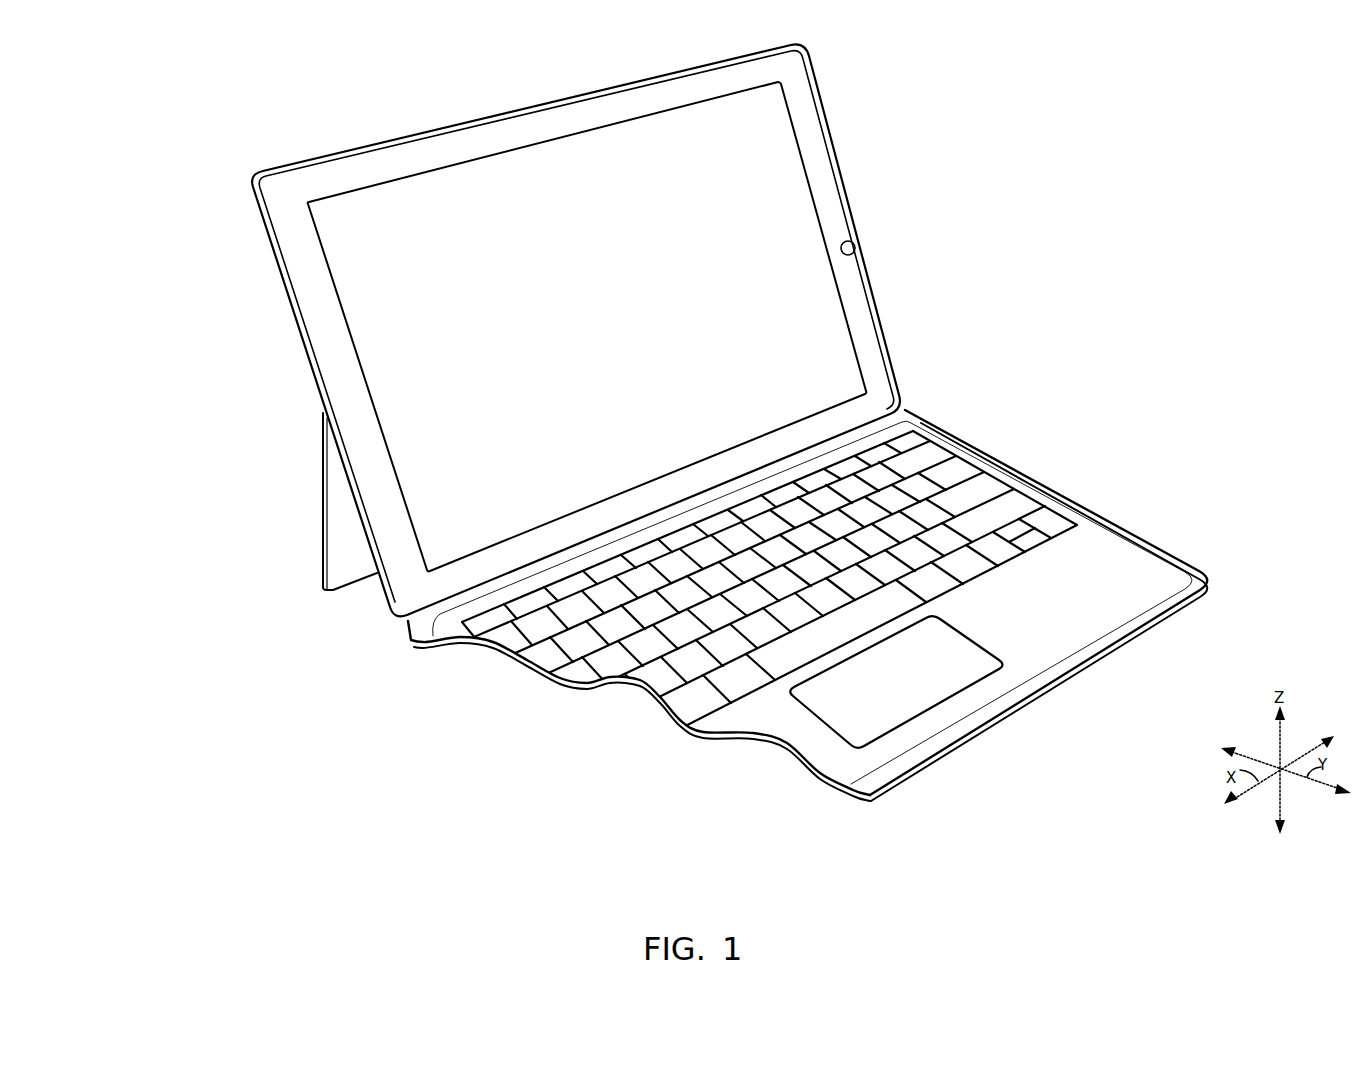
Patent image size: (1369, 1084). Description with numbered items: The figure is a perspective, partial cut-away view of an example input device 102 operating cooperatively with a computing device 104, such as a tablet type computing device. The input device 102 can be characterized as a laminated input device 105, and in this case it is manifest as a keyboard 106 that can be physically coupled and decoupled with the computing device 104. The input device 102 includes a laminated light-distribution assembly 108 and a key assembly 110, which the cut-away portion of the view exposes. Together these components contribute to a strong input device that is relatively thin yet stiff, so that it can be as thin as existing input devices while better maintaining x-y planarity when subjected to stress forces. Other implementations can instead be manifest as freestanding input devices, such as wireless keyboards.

The computing device 104 is at (337, 151).
The input device 102 is at (1017, 451).
The laminated input device 105 is at (917, 412).
The keyboard 106 is at (1056, 490).
The laminated light-distribution assembly 108 is at (678, 722).
The key assembly 110 is at (583, 686).